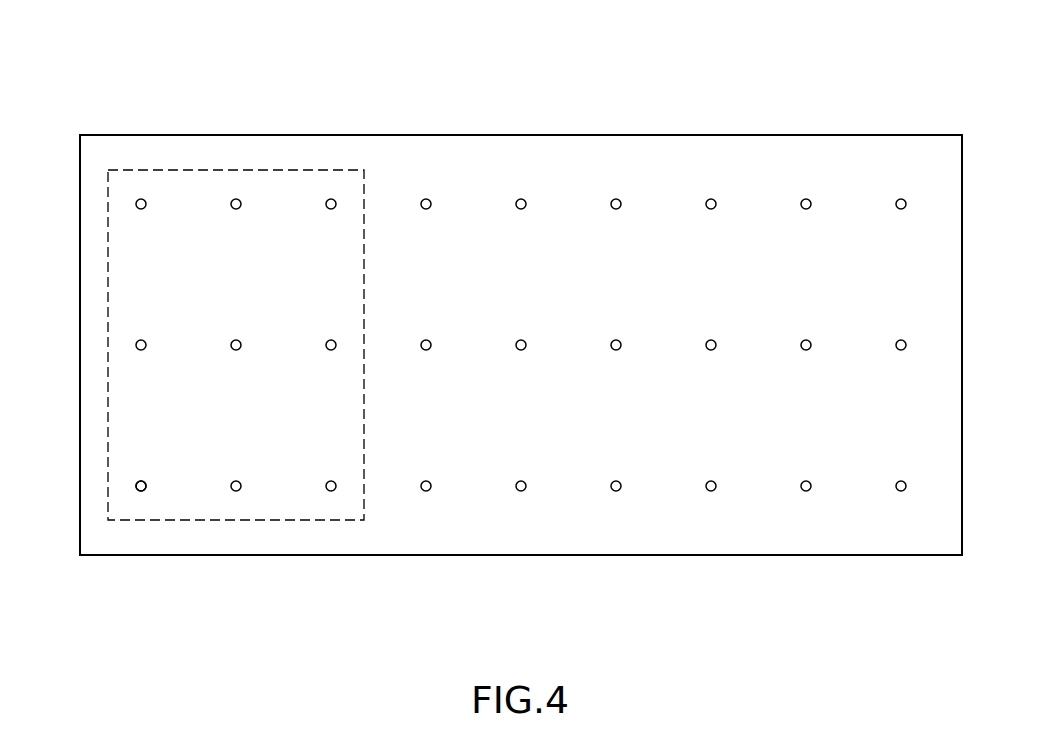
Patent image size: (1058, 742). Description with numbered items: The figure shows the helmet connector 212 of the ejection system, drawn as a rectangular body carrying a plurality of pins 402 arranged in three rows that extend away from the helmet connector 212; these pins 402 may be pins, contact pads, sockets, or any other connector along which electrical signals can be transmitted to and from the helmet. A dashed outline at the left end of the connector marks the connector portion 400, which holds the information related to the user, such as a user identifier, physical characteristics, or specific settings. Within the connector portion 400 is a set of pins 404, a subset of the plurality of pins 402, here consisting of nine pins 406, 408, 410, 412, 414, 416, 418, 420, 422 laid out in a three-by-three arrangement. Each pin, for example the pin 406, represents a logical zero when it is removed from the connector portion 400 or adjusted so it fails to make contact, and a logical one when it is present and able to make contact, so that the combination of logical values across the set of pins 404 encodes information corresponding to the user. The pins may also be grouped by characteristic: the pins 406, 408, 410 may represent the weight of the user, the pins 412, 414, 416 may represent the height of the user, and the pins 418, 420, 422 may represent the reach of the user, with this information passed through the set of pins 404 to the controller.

The helmet connector 212 is at (528, 128).
The connector portion 400 is at (262, 168).
The plurality of pins 402 is at (806, 192).
The set of pins 404 is at (133, 495).
The pin 406 is at (145, 208).
The pin 408 is at (240, 208).
The pin 410 is at (332, 209).
The pin 412 is at (145, 341).
The pin 414 is at (240, 341).
The pin 416 is at (332, 340).
The pin 418 is at (145, 482).
The pin 420 is at (240, 482).
The pin 422 is at (332, 481).